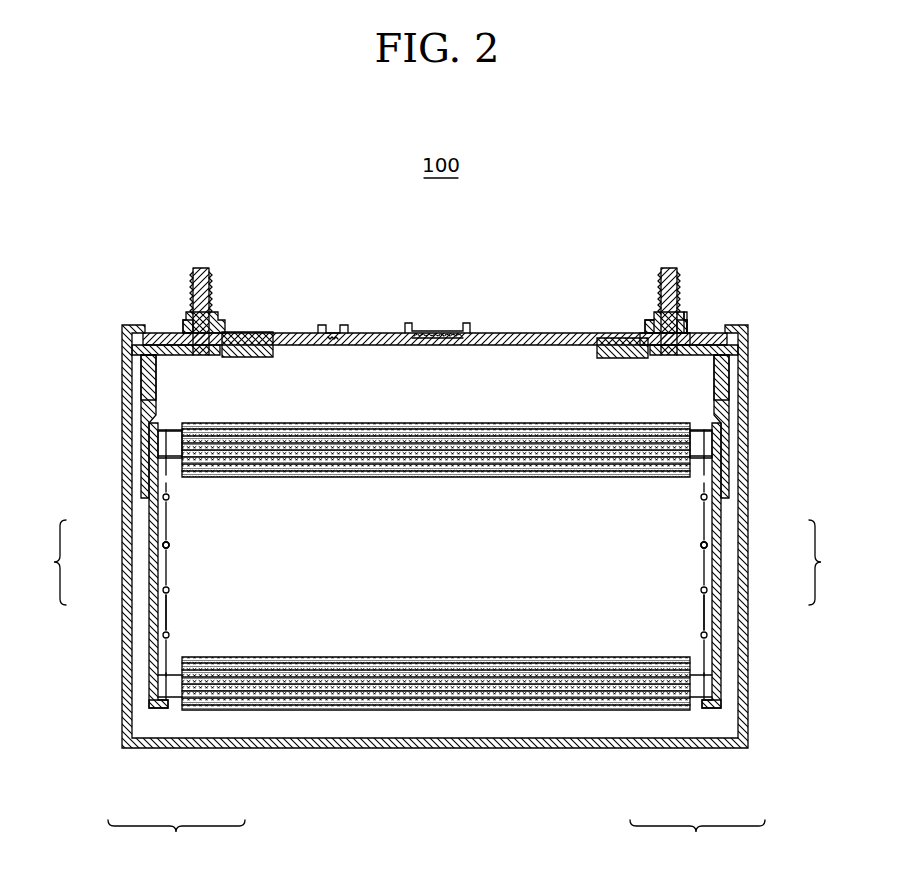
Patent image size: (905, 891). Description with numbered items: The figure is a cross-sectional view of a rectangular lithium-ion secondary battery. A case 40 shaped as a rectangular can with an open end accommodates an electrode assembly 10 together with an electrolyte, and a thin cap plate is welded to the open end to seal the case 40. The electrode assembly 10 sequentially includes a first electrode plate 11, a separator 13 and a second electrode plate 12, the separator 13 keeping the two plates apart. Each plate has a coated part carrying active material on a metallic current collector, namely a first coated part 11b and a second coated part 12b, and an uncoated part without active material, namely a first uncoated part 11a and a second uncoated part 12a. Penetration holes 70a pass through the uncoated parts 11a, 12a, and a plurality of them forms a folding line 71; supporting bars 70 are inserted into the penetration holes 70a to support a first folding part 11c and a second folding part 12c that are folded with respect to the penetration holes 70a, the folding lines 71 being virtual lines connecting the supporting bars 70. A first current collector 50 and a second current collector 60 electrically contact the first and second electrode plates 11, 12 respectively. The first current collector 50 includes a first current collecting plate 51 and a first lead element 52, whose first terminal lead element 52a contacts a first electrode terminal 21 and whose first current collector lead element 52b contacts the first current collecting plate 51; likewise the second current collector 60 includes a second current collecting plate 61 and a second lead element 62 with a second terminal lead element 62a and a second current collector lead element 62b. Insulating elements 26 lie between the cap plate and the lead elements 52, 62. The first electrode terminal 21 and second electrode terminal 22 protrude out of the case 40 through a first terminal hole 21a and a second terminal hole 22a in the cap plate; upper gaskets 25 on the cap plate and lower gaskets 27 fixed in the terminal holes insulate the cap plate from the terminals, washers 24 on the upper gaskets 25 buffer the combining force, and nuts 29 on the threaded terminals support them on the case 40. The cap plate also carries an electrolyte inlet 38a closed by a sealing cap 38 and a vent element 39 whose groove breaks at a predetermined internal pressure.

The electrode assembly 10 is at (436, 619).
The first electrode plate 11 is at (176, 837).
The first uncoated part 11a is at (172, 708).
The first coated part 11b is at (225, 708).
The first folding part 11c is at (152, 710).
The second electrode plate 12 is at (697, 837).
The second uncoated part 12a is at (697, 708).
The second coated part 12b is at (641, 708).
The second folding part 12c is at (717, 710).
The separator 13 is at (400, 680).
The first electrode terminal 21 is at (203, 266).
The first terminal hole 21a is at (217, 322).
The second electrode terminal 22 is at (668, 266).
The second terminal hole 22a is at (655, 322).
The washer 24 is at (651, 328).
The upper gasket 25 is at (690, 330).
The insulating element 26 is at (262, 345).
The lower gasket 27 is at (650, 340).
The nut 29 is at (191, 322).
The sealing cap 38 is at (324, 327).
The electrolyte inlet 38a is at (341, 330).
The vent element 39 is at (430, 326).
The case 40 is at (748, 655).
The first current collector 50 is at (48, 562).
The first current collecting plate 51 is at (138, 586).
The first lead element 52 is at (130, 493).
The first terminal lead element 52a is at (200, 352).
The first current collector lead element 52b is at (165, 443).
The second current collector 60 is at (826, 562).
The second current collecting plate 61 is at (732, 586).
The second lead element 62 is at (740, 493).
The second terminal lead element 62a is at (665, 351).
The second current collector lead element 62b is at (704, 445).
The supporting bar 70 is at (170, 544).
The penetration hole 70a is at (170, 552).
The folding line 71 is at (170, 598).